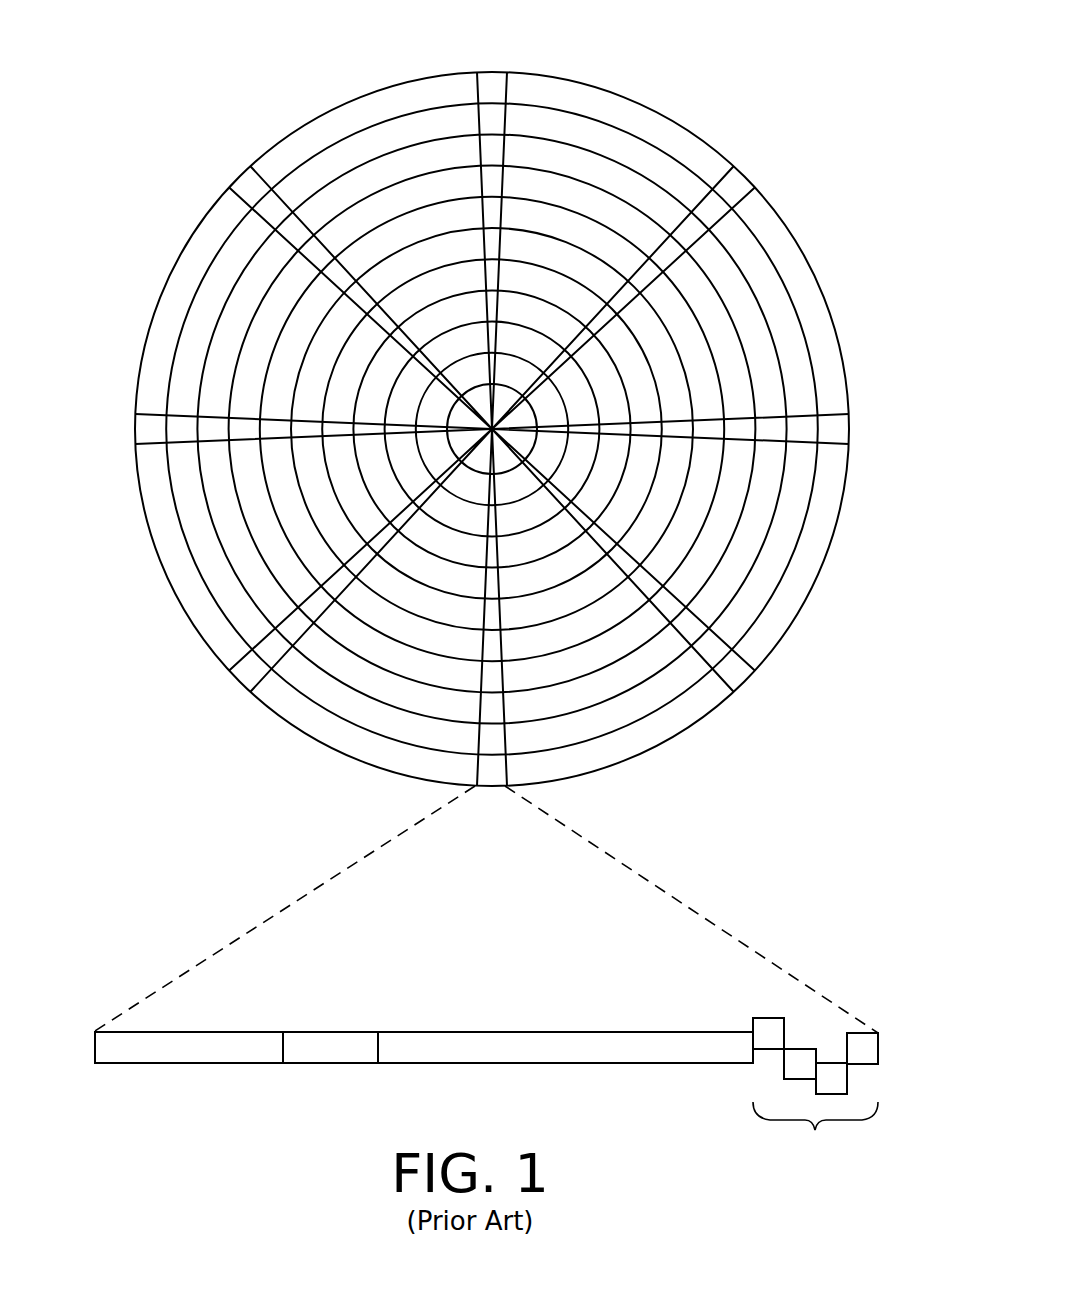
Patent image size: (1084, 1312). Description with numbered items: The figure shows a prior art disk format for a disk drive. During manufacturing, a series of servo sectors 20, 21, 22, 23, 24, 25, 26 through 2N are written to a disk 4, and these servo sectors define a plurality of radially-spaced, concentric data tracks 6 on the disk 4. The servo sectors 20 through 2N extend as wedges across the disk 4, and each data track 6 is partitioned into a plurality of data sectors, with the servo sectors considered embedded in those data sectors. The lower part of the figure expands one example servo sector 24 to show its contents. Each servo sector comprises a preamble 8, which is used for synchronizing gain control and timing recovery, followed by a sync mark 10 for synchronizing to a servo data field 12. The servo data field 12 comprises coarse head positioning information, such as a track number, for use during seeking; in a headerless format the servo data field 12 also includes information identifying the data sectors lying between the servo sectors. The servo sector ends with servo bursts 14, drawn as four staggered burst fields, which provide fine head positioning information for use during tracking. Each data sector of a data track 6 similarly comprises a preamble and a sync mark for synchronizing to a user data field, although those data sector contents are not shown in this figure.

The disk 4 is at (492, 400).
The data track 6 is at (614, 146).
The servo sector 20 is at (497, 86).
The servo sector 21 is at (738, 186).
The servo sector 22 is at (853, 432).
The servo sector 23 is at (740, 680).
The servo sector 24 is at (330, 868).
The servo sector 25 is at (240, 680).
The servo sector 26 is at (132, 432).
The servo sector 2N is at (247, 186).
The preamble 8 is at (168, 1065).
The sync mark 10 is at (329, 1065).
The servo data field 12 is at (549, 1065).
The servo bursts 14 is at (740, 998).